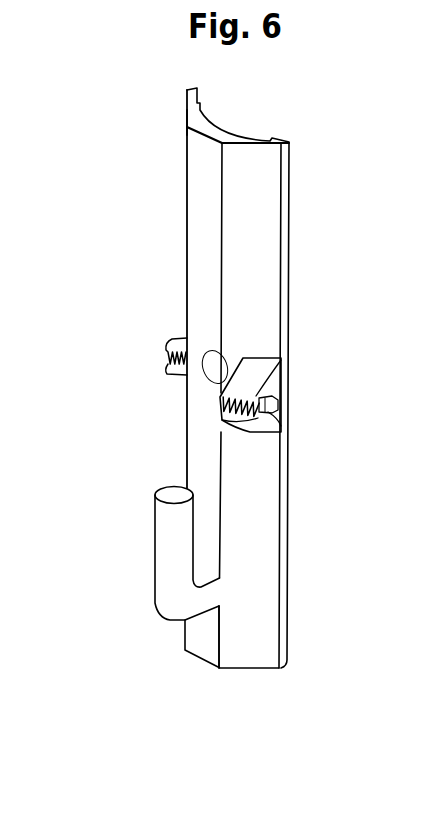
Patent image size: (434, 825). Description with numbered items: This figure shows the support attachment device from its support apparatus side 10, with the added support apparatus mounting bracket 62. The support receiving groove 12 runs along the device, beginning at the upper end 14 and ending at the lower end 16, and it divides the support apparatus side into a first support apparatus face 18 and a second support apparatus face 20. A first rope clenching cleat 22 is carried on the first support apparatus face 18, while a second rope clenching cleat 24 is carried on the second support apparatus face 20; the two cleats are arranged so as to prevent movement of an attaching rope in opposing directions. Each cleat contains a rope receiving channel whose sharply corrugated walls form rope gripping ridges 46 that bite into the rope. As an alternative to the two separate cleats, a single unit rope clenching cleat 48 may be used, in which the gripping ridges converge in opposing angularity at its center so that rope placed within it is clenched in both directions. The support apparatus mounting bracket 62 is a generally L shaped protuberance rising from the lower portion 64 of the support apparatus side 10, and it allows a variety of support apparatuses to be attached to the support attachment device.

The support apparatus side 10 is at (203, 638).
The support receiving groove 12 is at (203, 192).
The upper end 14 is at (187, 98).
The lower end 16 is at (247, 668).
The first support apparatus face 18 is at (253, 220).
The second support apparatus face 20 is at (187, 115).
The first rope clenching cleat 22 is at (253, 373).
The second rope clenching cleat 24 is at (187, 310).
The rope gripping ridges 46 is at (233, 420).
The single unit rope clenching cleat 48 is at (278, 403).
The support apparatus mounting bracket 62 is at (163, 550).
The lower portion 64 is at (253, 482).